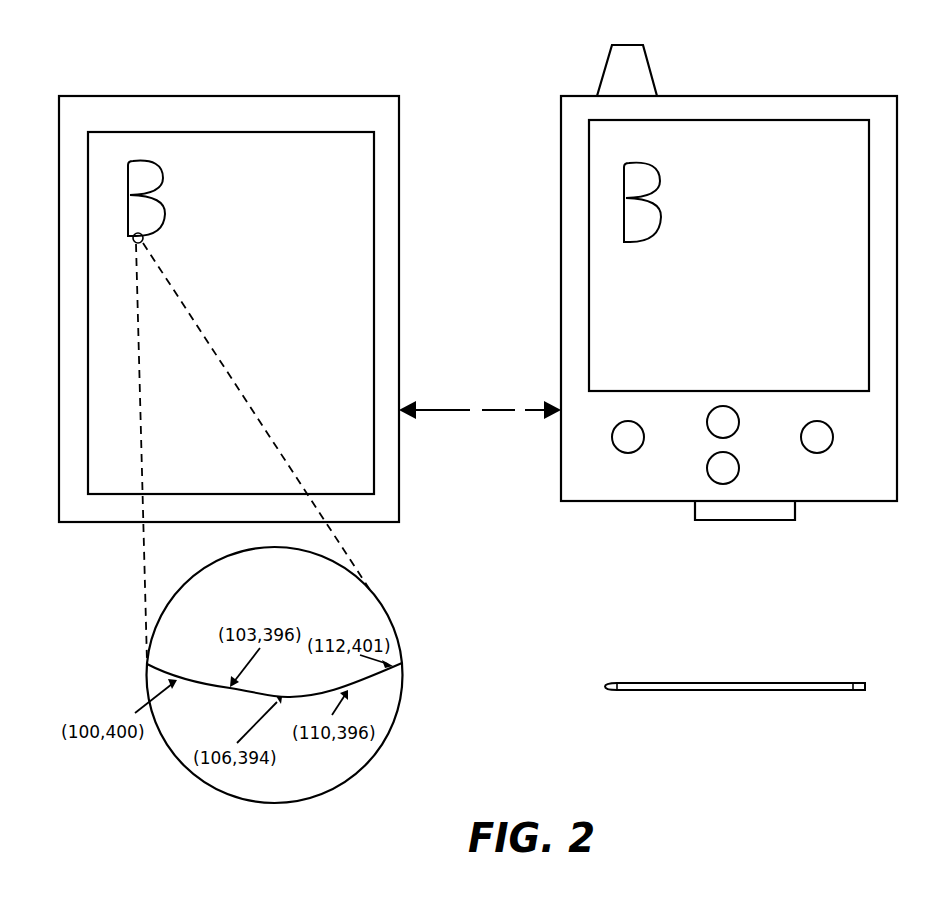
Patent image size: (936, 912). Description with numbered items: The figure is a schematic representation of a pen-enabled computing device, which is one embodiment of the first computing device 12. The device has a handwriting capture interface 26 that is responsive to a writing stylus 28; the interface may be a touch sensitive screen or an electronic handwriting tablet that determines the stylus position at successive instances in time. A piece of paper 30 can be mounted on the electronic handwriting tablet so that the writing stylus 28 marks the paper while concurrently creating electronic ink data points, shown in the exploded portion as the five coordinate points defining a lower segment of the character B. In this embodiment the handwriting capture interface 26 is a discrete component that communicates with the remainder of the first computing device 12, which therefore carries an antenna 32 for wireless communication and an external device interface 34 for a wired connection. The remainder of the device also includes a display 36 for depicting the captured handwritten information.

The first computing device 12 is at (478, 52).
The handwriting capture interface 26 is at (399, 183).
The writing stylus 28 is at (832, 683).
The piece of paper 30 is at (182, 132).
The antenna 32 is at (653, 58).
The external device interface 34 is at (777, 520).
The display 36 is at (705, 120).